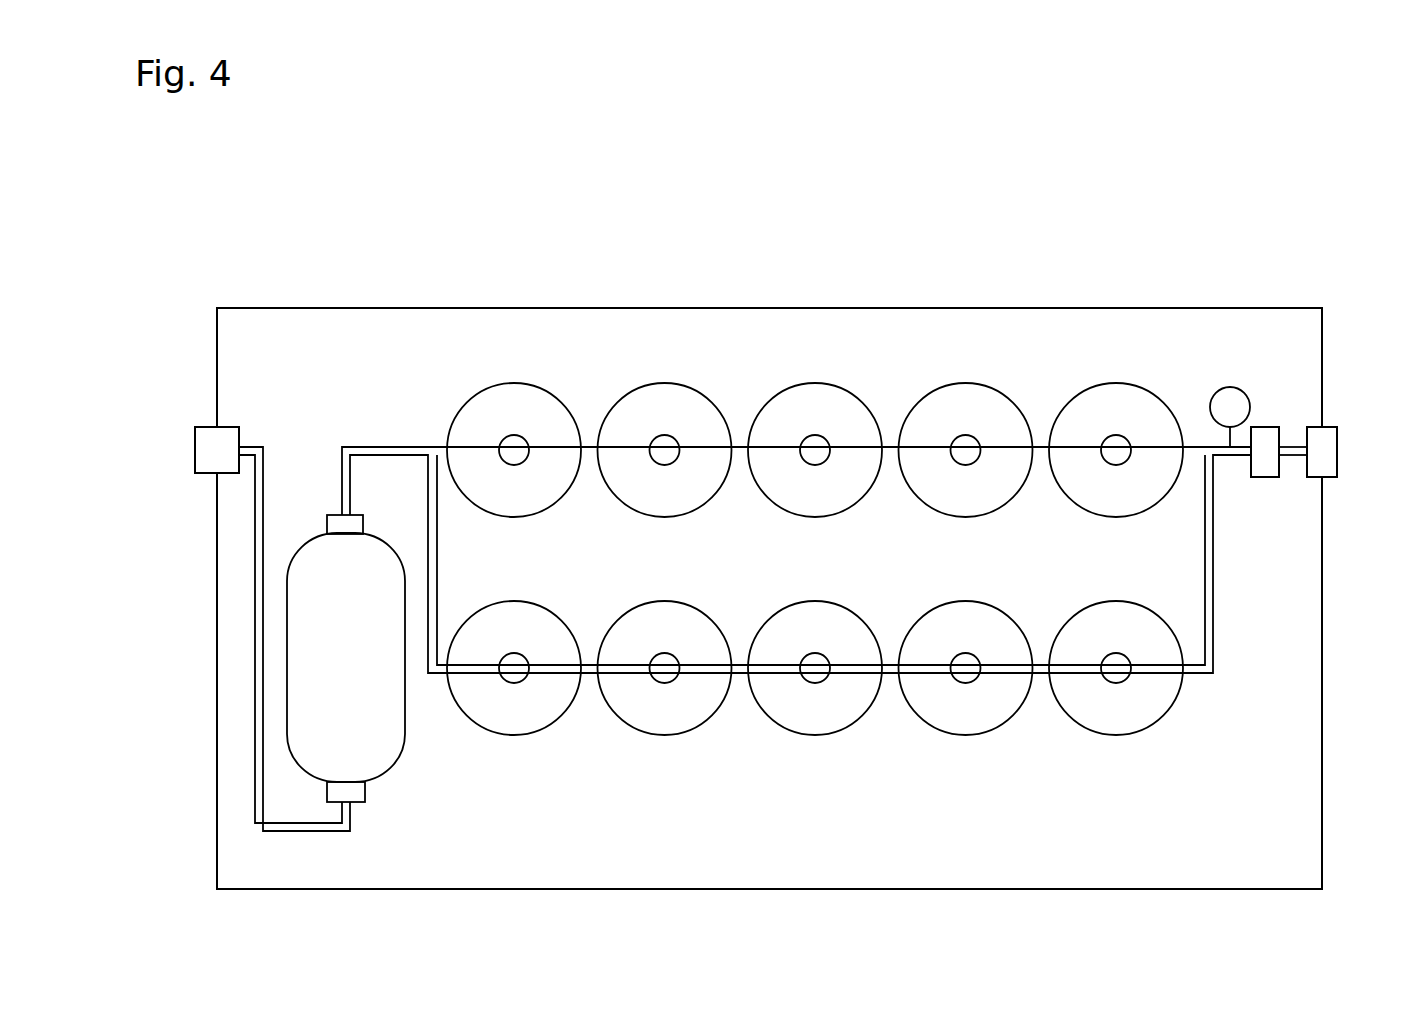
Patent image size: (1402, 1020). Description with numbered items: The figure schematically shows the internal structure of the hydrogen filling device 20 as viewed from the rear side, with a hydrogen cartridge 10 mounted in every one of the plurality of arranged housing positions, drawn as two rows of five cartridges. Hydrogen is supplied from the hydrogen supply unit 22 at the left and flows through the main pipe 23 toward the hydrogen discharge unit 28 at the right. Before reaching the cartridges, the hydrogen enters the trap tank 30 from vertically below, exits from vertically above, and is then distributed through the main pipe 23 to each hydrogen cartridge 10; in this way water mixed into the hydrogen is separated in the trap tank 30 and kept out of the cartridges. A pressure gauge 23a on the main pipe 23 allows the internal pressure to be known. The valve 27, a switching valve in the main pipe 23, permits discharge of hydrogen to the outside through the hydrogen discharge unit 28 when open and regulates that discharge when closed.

The hydrogen cartridge 10 is at (469, 378).
The hydrogen filling device 20 is at (290, 195).
The hydrogen supply unit 22 is at (205, 452).
The main pipe 23 is at (385, 447).
The pressure gauge 23a is at (1231, 387).
The valve 27 is at (1267, 430).
The hydrogen discharge unit 28 is at (1325, 448).
The trap tank 30 is at (393, 790).